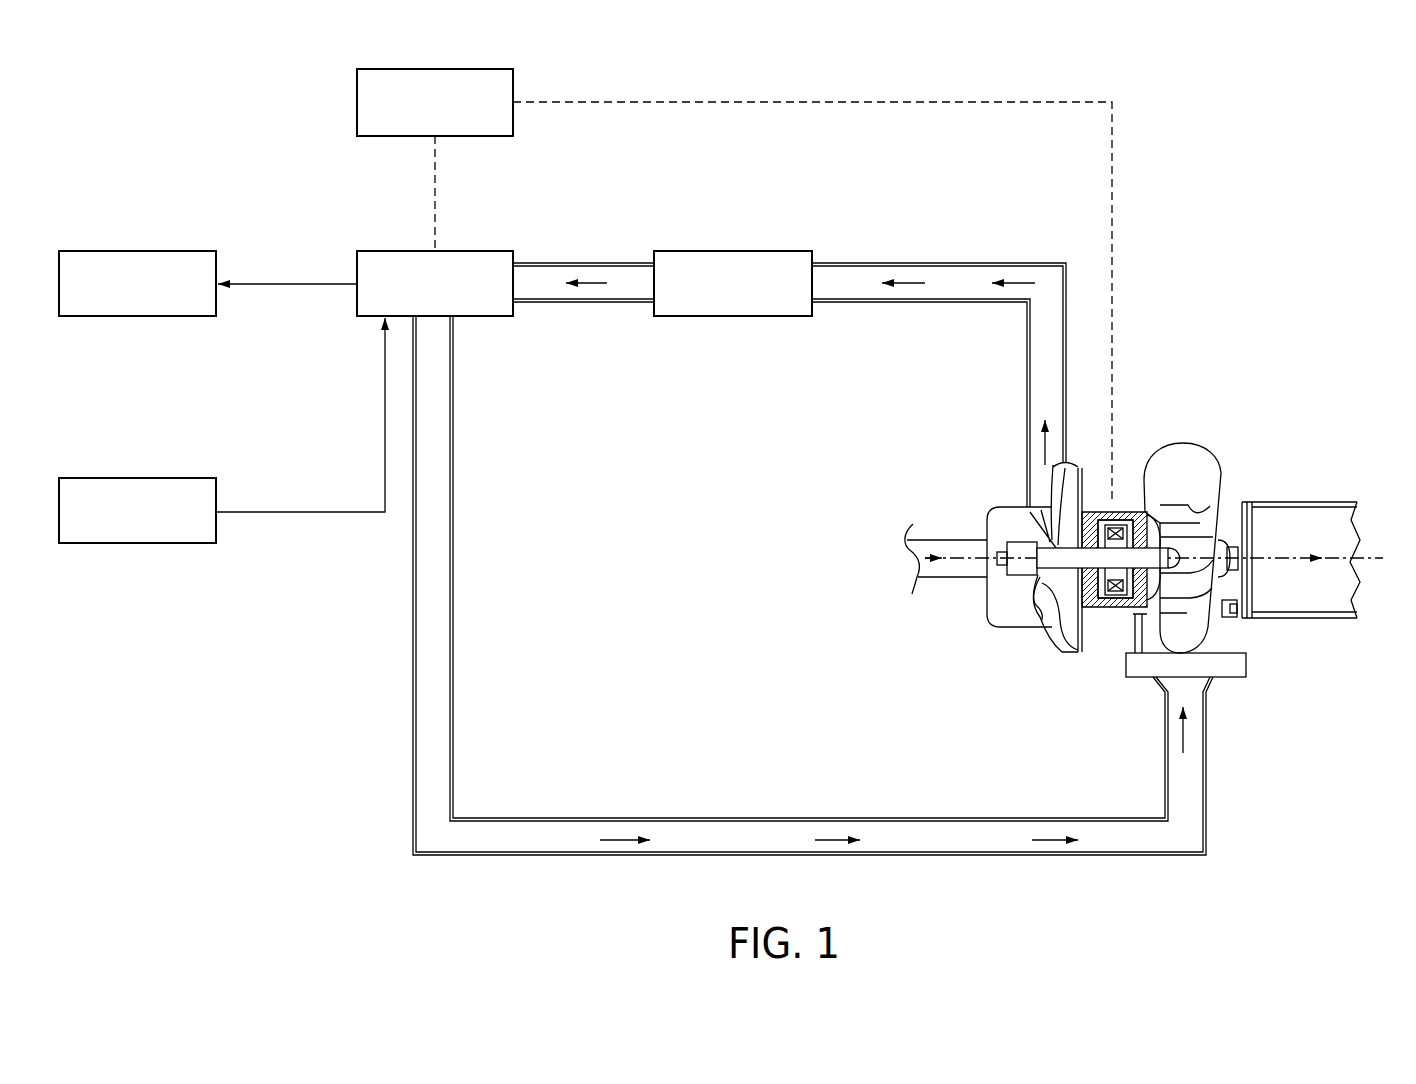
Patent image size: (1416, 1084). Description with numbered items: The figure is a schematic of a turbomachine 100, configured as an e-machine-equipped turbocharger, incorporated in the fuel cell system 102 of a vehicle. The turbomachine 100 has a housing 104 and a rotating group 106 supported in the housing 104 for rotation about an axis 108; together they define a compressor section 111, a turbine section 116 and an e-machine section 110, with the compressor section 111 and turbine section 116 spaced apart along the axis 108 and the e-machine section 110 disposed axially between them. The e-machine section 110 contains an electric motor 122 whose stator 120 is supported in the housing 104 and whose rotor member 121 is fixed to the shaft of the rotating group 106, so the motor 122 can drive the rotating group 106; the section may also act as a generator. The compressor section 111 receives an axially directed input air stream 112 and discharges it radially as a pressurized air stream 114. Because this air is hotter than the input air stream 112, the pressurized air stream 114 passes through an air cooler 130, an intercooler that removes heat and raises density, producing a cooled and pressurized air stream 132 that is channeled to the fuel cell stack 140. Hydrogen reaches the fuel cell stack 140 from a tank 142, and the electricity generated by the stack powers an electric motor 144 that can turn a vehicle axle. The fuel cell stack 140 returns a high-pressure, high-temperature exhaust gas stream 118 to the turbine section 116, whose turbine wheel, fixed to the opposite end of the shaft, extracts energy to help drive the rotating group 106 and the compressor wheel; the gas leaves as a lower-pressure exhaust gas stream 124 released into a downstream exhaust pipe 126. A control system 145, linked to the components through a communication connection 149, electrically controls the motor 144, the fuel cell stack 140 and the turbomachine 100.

The turbomachine 100 is at (1187, 371).
The fuel cell system 102 is at (544, 246).
The housing 104 is at (1122, 501).
The rotating group 106 is at (1143, 551).
The axis 108 is at (1373, 558).
The e-machine section 110 is at (1099, 503).
The compressor section 111 is at (1046, 659).
The input air stream 112 is at (912, 552).
The pressurized air stream 114 is at (1040, 438).
The turbine section 116 is at (1216, 466).
The exhaust gas stream 118 is at (830, 842).
The stator 120 is at (1104, 531).
The rotor member 121 is at (1098, 573).
The electric motor 122 is at (1102, 602).
The lower-pressure exhaust gas stream 124 is at (1273, 560).
The downstream exhaust pipe 126 is at (1310, 502).
The air cooler 130 is at (733, 251).
The cooled and pressurized air stream 132 is at (607, 283).
The fuel cell stack 140 is at (394, 251).
The tank 142 is at (131, 478).
The electric motor 144 is at (138, 251).
The control system 145 is at (357, 101).
The communication connection 149 is at (813, 101).